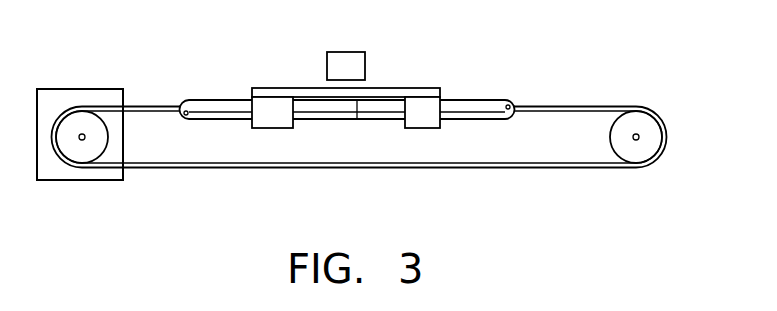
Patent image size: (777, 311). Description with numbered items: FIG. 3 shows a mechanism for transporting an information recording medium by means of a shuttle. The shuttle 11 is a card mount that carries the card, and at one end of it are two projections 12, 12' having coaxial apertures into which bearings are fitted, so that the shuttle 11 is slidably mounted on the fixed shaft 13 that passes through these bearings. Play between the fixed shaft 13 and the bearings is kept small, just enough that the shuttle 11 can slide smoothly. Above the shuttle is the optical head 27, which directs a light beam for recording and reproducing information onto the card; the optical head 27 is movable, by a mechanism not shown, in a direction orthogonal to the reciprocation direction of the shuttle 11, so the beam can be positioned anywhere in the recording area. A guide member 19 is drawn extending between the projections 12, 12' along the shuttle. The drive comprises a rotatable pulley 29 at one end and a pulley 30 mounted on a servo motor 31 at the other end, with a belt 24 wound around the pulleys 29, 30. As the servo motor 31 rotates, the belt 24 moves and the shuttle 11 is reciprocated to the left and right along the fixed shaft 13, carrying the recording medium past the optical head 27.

The shuttle 11 is at (357, 120).
The projection 12 is at (270, 88).
The projection 12' is at (444, 86).
The fixed shaft 13 is at (493, 107).
The guide bar 19 is at (395, 88).
The belt 24 is at (582, 168).
The optical head 27 is at (345, 58).
The rotatable pulley 29 is at (635, 153).
The pulley 30 is at (87, 150).
The servo motor 31 is at (55, 172).